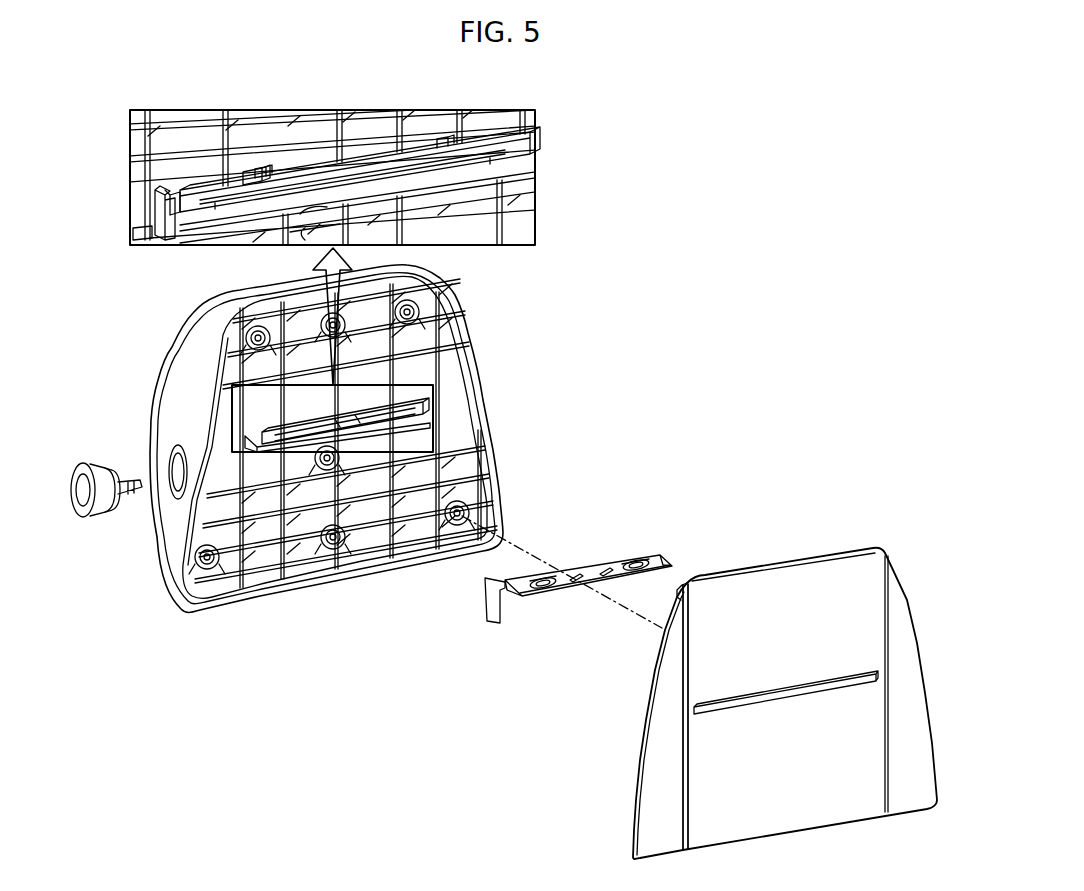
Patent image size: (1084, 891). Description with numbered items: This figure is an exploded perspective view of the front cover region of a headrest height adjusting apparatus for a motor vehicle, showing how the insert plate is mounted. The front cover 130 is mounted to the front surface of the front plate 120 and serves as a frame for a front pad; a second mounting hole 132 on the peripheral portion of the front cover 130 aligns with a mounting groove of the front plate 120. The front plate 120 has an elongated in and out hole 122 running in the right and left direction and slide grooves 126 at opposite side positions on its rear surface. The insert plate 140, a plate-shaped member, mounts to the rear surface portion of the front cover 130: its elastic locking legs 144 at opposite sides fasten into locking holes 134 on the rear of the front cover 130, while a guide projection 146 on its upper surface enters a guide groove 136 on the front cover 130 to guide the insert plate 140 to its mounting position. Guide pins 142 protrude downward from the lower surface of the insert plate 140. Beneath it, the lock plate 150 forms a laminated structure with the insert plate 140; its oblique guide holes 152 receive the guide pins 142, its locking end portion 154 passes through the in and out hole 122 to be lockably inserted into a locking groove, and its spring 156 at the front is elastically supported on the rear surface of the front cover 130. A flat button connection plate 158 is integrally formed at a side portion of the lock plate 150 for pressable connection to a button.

The front plate 120 is at (800, 548).
The in and out hole 122 is at (782, 693).
The slide grooves 126 is at (685, 810).
The front cover 130 is at (500, 362).
The second mounting hole 132 is at (333, 548).
The locking holes 134 is at (137, 245).
The guide groove 136 is at (262, 170).
The insert plate 140 is at (428, 416).
The guide pins 142 is at (327, 200).
The elastic locking legs 144 is at (150, 205).
The guide projection 146 is at (270, 180).
The lock plate 150 is at (585, 560).
The guide holes 152 is at (576, 581).
The locking end portion 154 is at (606, 576).
The spring 156 is at (521, 582).
The button connection plate 158 is at (490, 600).